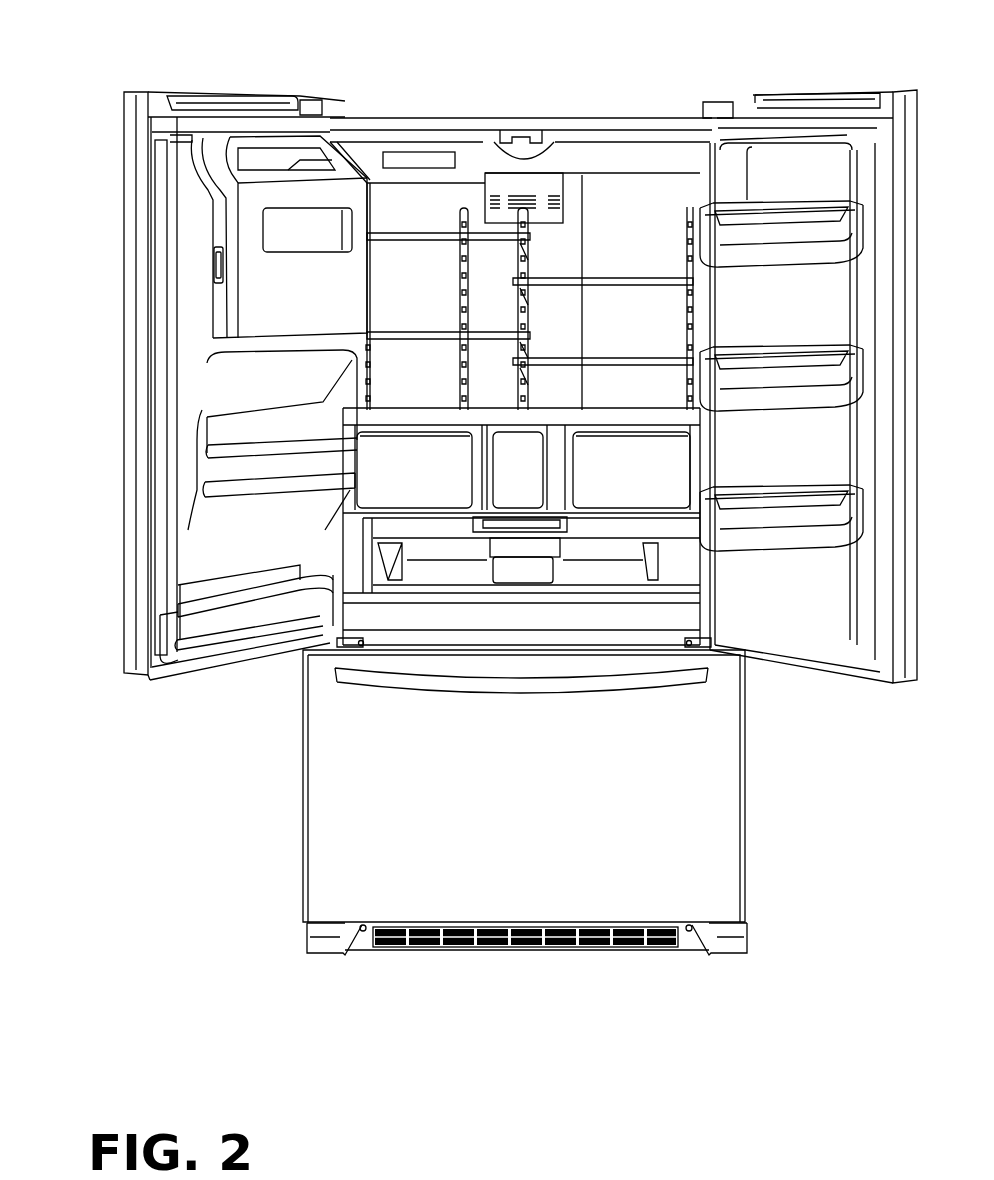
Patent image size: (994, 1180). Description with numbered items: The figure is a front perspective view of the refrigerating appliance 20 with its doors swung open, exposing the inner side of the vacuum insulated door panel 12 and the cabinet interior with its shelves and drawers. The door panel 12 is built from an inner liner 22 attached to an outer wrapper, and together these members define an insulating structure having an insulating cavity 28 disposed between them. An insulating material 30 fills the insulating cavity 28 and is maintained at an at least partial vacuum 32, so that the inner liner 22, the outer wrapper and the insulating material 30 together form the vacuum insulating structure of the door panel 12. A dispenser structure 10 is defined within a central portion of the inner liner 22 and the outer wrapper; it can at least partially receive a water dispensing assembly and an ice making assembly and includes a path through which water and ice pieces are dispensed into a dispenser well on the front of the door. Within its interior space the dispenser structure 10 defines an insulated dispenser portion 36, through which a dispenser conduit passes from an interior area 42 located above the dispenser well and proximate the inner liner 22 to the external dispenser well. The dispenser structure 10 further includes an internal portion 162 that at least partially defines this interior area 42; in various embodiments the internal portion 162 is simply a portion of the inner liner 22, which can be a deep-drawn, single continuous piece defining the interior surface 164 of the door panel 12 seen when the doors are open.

The dispenser structure 10 is at (195, 258).
The door panel 12 is at (108, 452).
The refrigerating appliance 20 is at (507, 107).
The inner liner 22 is at (193, 315).
The insulating cavity 28 is at (148, 500).
The insulating material 30 is at (146, 560).
The at least partial vacuum 32 is at (126, 138).
The insulated dispenser portion 36 is at (166, 192).
The interior area 42 is at (180, 142).
The internal portion 162 is at (197, 388).
The interior surface 164 is at (190, 465).